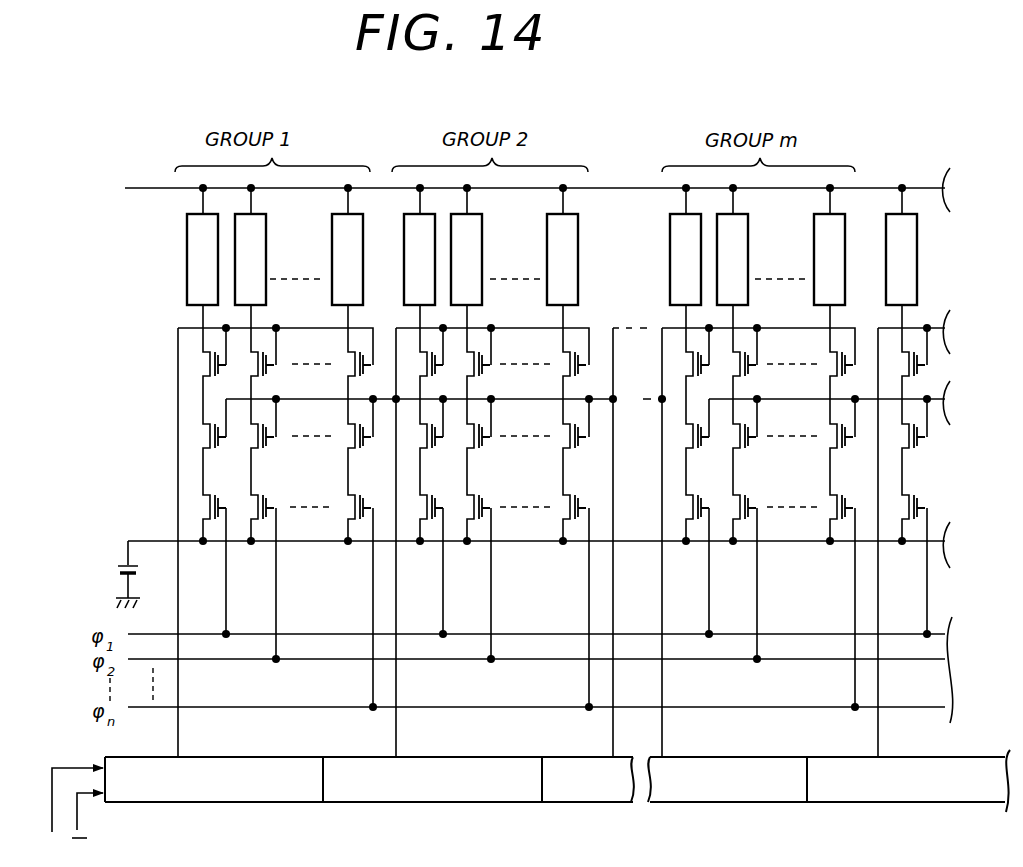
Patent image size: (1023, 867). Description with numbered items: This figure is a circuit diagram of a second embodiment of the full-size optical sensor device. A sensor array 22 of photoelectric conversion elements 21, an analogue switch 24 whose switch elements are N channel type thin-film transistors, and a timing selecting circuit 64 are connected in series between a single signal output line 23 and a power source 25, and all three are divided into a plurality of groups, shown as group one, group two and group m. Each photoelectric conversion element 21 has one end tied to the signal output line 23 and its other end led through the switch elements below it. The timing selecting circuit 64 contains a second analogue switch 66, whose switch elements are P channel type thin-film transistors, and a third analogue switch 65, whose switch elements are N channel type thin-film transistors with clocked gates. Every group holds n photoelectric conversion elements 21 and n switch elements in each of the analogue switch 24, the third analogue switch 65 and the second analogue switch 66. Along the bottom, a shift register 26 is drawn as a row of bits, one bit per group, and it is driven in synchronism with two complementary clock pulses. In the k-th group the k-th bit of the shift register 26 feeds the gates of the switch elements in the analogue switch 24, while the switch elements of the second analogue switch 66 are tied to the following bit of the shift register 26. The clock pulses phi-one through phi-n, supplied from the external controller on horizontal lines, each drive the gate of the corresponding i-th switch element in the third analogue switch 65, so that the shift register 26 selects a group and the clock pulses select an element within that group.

The photoelectric conversion element 21 is at (547, 241).
The sensor array 22 is at (492, 246).
The signal output line 23 is at (921, 186).
The analogue switch 24 is at (170, 356).
The power source 25 is at (112, 566).
The shift register 26 is at (370, 803).
The timing selecting circuit 64 is at (623, 468).
The third analogue switch 65 is at (158, 495).
The second analogue switch 66 is at (170, 426).